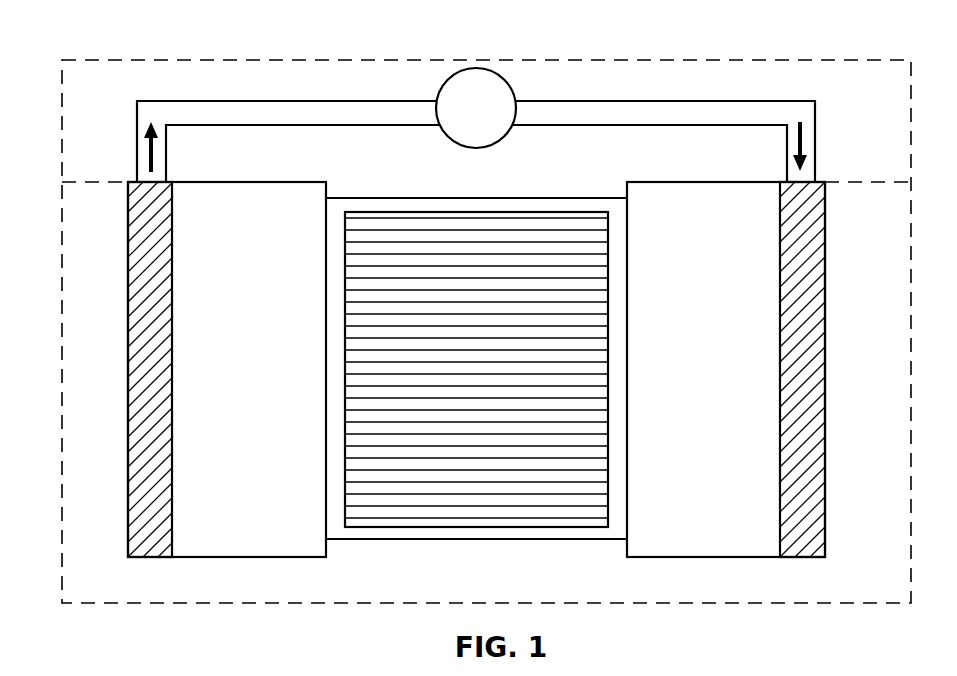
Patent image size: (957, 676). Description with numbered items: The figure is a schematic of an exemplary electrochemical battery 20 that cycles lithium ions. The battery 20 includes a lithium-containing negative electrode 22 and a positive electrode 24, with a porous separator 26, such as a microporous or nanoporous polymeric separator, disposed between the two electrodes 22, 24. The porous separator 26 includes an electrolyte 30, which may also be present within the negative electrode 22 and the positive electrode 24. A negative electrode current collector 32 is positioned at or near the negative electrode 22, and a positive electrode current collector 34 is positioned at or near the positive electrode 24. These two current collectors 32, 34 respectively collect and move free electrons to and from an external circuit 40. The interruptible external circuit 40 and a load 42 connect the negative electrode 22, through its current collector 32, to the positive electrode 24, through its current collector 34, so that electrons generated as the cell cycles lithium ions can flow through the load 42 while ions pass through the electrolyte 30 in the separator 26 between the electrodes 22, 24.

The battery 20 is at (56, 225).
The negative electrode 22 is at (227, 369).
The positive electrode 24 is at (726, 369).
The porous separator 26 is at (477, 540).
The electrolyte 30 is at (463, 366).
The negative electrode current collector 32 is at (127, 264).
The positive electrode current collector 34 is at (826, 259).
The external circuit 40 is at (300, 58).
The load 42 is at (476, 108).